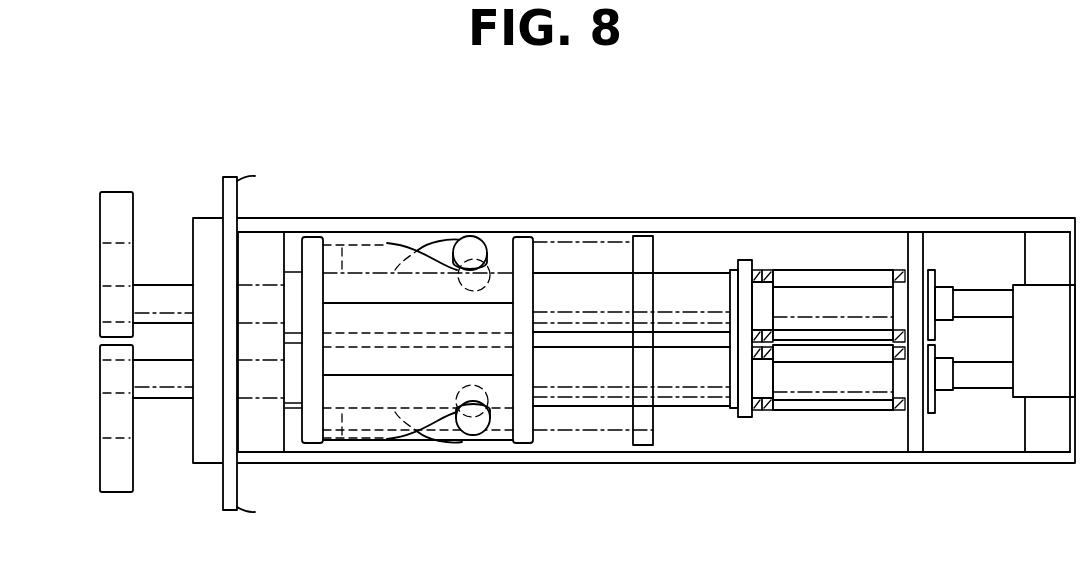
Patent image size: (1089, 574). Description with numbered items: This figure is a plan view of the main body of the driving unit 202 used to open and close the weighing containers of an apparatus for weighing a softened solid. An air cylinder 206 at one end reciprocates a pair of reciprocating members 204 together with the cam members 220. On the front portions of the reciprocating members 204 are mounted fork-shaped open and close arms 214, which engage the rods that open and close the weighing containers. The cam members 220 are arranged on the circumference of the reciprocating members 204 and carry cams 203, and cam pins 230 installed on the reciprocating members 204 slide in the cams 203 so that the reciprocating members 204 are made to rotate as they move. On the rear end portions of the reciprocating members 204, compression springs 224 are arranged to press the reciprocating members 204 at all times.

The driving unit 202 is at (919, 209).
The cam 203 is at (432, 252).
The reciprocating member 204 is at (683, 280).
The air cylinder 206 is at (983, 293).
The open and close arm 214 is at (135, 208).
The cam member 220 is at (363, 248).
The compression spring 224 is at (773, 270).
The cam pin 230 is at (472, 248).